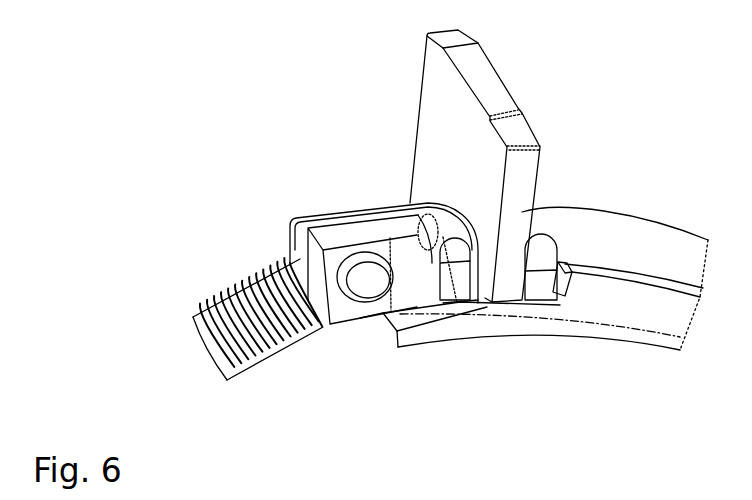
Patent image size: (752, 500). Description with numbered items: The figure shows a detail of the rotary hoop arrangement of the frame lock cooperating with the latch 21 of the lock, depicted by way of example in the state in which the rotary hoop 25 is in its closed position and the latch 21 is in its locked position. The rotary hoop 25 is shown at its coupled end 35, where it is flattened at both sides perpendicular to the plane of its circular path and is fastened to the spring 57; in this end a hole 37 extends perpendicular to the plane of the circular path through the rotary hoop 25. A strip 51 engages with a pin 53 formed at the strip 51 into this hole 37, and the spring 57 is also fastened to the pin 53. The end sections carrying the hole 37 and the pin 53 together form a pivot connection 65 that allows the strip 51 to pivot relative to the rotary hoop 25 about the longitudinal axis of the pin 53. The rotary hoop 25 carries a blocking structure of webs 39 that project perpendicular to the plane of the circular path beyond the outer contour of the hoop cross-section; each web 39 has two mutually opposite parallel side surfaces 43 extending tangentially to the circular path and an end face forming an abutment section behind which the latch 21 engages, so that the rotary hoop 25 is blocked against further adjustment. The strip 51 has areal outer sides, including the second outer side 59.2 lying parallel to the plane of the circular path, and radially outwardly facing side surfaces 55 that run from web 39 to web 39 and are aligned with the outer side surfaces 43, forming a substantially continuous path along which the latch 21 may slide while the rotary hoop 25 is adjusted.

The latch 21 is at (447, 125).
The rotary hoop 25 is at (597, 222).
The coupled end 35 is at (399, 225).
The hole 37 is at (384, 284).
The web 39 is at (457, 293).
The side surface 43 is at (452, 263).
The strip 51 is at (580, 318).
The pin 53 is at (362, 290).
The side surface 55 is at (618, 272).
The threaded screw 57 is at (243, 305).
The second outer side 59.2 is at (643, 307).
The pivot connection 65 is at (380, 333).